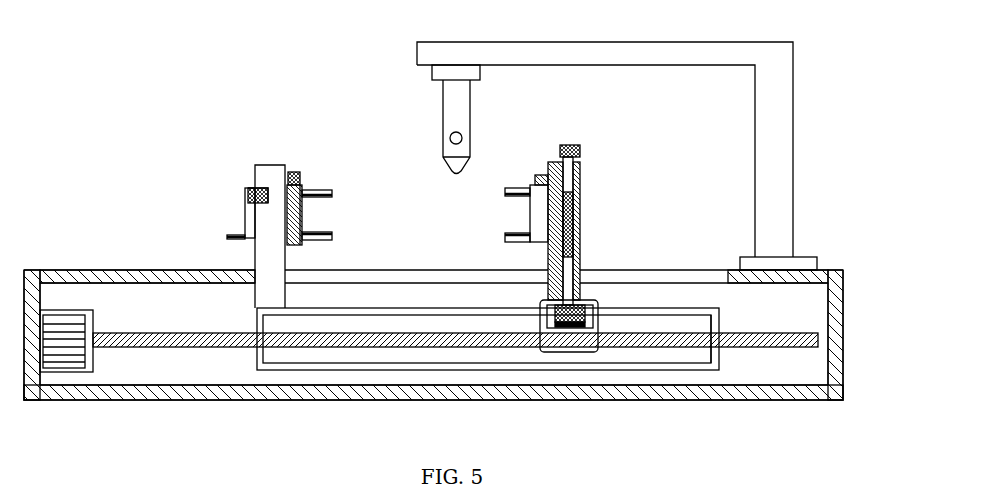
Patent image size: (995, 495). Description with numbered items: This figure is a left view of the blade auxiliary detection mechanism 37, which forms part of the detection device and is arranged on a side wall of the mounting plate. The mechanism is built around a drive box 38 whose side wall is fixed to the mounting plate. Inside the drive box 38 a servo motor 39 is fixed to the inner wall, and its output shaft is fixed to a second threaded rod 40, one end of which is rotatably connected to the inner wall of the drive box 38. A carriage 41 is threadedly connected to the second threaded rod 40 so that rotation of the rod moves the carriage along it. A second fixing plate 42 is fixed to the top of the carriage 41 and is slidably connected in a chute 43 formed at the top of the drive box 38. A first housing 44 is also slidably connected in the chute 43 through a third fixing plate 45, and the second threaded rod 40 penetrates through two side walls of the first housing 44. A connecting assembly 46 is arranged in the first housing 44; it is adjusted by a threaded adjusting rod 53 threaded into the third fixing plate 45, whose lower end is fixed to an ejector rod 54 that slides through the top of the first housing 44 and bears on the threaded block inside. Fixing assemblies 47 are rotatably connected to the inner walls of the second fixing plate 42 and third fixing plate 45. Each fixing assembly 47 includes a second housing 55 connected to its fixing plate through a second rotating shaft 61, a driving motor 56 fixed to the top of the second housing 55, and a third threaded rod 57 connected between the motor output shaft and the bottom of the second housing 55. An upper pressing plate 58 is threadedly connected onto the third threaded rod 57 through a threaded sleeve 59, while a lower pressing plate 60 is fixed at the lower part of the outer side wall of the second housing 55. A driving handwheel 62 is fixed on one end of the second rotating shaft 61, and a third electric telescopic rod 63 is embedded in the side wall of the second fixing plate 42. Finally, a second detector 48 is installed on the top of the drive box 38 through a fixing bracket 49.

The blade auxiliary detection mechanism 37 is at (457, 300).
The drive box 38 is at (775, 271).
The servo motor 39 is at (77, 320).
The second threaded rod 40 is at (218, 345).
The carriage 41 is at (718, 312).
The second fixing plate 42 is at (296, 185).
The chute 43 is at (238, 273).
The first housing 44 is at (562, 328).
The third fixing plate 45 is at (580, 238).
The connecting assembly 46 is at (540, 335).
The fixing assembly 47 is at (528, 190).
The second detector 48 is at (458, 112).
The fixing bracket 49 is at (778, 100).
The threaded adjusting rod 53 is at (582, 170).
The ejector rod 54 is at (578, 325).
The second housing 55 is at (250, 190).
The driving motor 56 is at (300, 185).
The third threaded rod 57 is at (290, 180).
The upper pressing plate 58 is at (330, 191).
The threaded sleeve 59 is at (296, 172).
The lower pressing plate 60 is at (333, 236).
The second rotating shaft 61 is at (245, 215).
The driving handwheel 62 is at (227, 237).
The third electric telescopic rod 63 is at (248, 195).